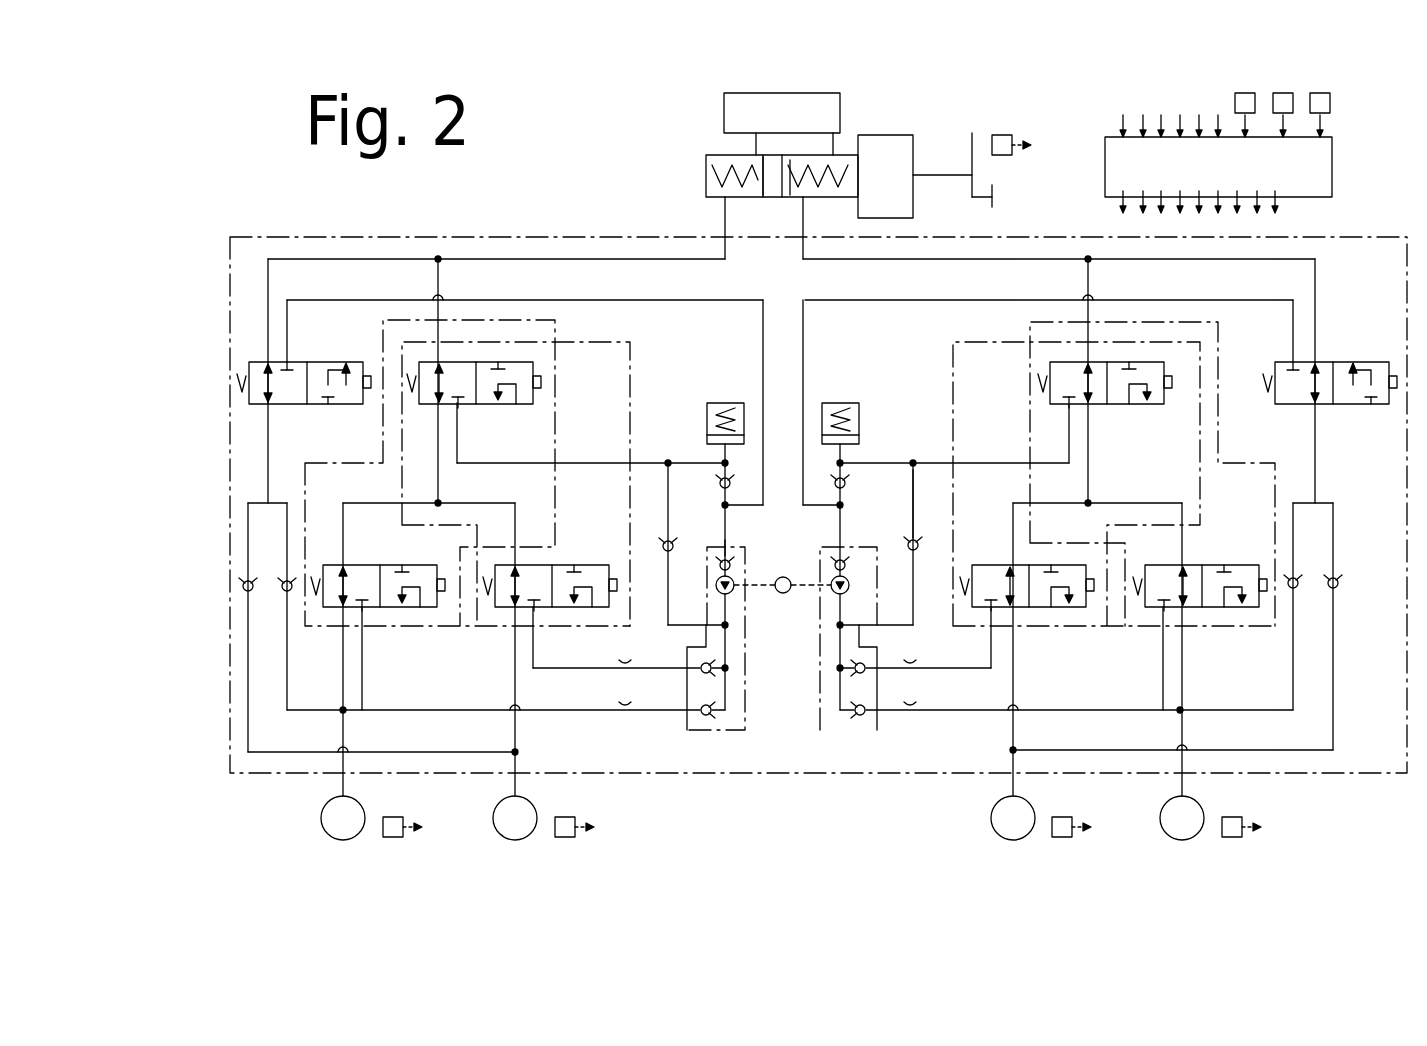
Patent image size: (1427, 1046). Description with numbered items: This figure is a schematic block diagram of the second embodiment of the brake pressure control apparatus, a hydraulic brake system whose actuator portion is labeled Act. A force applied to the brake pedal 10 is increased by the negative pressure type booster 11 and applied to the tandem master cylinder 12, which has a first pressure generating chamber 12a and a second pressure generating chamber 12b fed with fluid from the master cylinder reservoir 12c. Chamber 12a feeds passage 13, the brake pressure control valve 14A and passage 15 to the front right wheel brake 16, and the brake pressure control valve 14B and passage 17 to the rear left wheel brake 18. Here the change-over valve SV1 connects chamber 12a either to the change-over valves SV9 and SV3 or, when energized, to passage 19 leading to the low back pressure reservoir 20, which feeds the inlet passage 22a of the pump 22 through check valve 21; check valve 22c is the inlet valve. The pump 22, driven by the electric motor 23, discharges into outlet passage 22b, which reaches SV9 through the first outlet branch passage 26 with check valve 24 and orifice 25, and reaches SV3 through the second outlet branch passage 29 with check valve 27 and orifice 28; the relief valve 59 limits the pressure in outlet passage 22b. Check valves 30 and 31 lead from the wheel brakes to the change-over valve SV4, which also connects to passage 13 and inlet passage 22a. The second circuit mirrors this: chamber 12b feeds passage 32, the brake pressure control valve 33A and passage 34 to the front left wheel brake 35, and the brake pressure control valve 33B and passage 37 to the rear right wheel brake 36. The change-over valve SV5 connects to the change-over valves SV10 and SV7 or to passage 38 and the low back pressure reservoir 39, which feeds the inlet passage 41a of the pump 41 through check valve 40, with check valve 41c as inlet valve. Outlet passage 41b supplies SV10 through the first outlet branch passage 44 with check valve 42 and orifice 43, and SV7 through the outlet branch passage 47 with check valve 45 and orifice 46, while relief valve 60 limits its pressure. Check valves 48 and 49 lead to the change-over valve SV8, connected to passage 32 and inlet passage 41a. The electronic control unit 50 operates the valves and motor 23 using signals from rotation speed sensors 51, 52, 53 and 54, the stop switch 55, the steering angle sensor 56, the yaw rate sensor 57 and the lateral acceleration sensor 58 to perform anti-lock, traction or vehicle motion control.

The brake pedal 10 is at (995, 193).
The negative pressure type booster 11 is at (890, 135).
The tandem master cylinder 12 is at (706, 185).
The first pressure generating chamber 12a is at (790, 200).
The second pressure generating chamber 12b is at (706, 160).
The master cylinder reservoir 12c is at (724, 105).
The passage 13 is at (805, 215).
The brake pressure control valve 14A is at (1222, 445).
The brake pressure control valve 14B is at (953, 350).
The passage 15 is at (1180, 790).
The front right wheel brake 16 is at (1182, 840).
The passage 17 is at (1010, 790).
The rear left wheel brake 18 is at (1013, 840).
The passage 19 is at (895, 463).
The low back pressure reservoir 20 is at (840, 403).
The check valve 21 is at (848, 483).
The pump 22 is at (822, 716).
The inlet passage 22a is at (835, 558).
The outlet passage 22b is at (838, 648).
The check valve 22c is at (908, 548).
The electric motor 23 is at (783, 577).
The check valve 24 is at (857, 716).
The orifice 25 is at (910, 717).
The first outlet branch passage 26 is at (965, 712).
The check valve 27 is at (850, 690).
The orifice 28 is at (920, 655).
The second outlet branch passage 29 is at (920, 698).
The check valve 30 is at (1297, 580).
The check valve 31 is at (1337, 580).
The passage 32 is at (725, 215).
The brake pressure control valve 33A is at (383, 445).
The brake pressure control valve 33B is at (632, 385).
The passage 34 is at (340, 785).
The front left wheel brake 35 is at (343, 840).
The rear right wheel brake 36 is at (512, 790).
The passage 37 is at (515, 840).
The passage 38 is at (585, 463).
The low back pressure reservoir 39 is at (727, 403).
The check valve 40 is at (718, 480).
The pump 41 is at (753, 733).
The inlet passage 41a is at (722, 557).
The outlet passage 41b is at (725, 595).
The check valve 41c is at (715, 560).
The check valve 42 is at (706, 714).
The orifice 43 is at (625, 708).
The first outlet branch passage 44 is at (545, 748).
The check valve 45 is at (690, 672).
The orifice 46 is at (623, 676).
The outlet branch passage 47 is at (533, 652).
The check valve 48 is at (283, 582).
The check valve 49 is at (245, 590).
The electronic control unit 50 is at (1105, 165).
The rotation speed sensor 51 is at (1232, 837).
The rotation speed sensor 52 is at (1062, 837).
The rotation speed sensor 53 is at (393, 837).
The rotation speed sensor 54 is at (565, 837).
The stop switch 55 is at (1002, 135).
The steering angle sensor 56 is at (1245, 93).
The yaw rate sensor 57 is at (1283, 93).
The lateral acceleration sensor 58 is at (1320, 93).
The relief valve 59 is at (918, 538).
The relief valve 60 is at (662, 546).
The electromagnetic change-over valve SV1 is at (1133, 405).
The electromagnetic change-over valve SV3 is at (990, 565).
The electromagnetic change-over valve SV4 is at (1360, 362).
The electromagnetic change-over valve SV5 is at (490, 405).
The electromagnetic change-over valve SV7 is at (580, 565).
The electromagnetic change-over valve SV8 is at (333, 362).
The electromagnetic change-over valve SV9 is at (1235, 565).
The electromagnetic change-over valve SV10 is at (375, 565).
The actuator Act is at (781, 780).